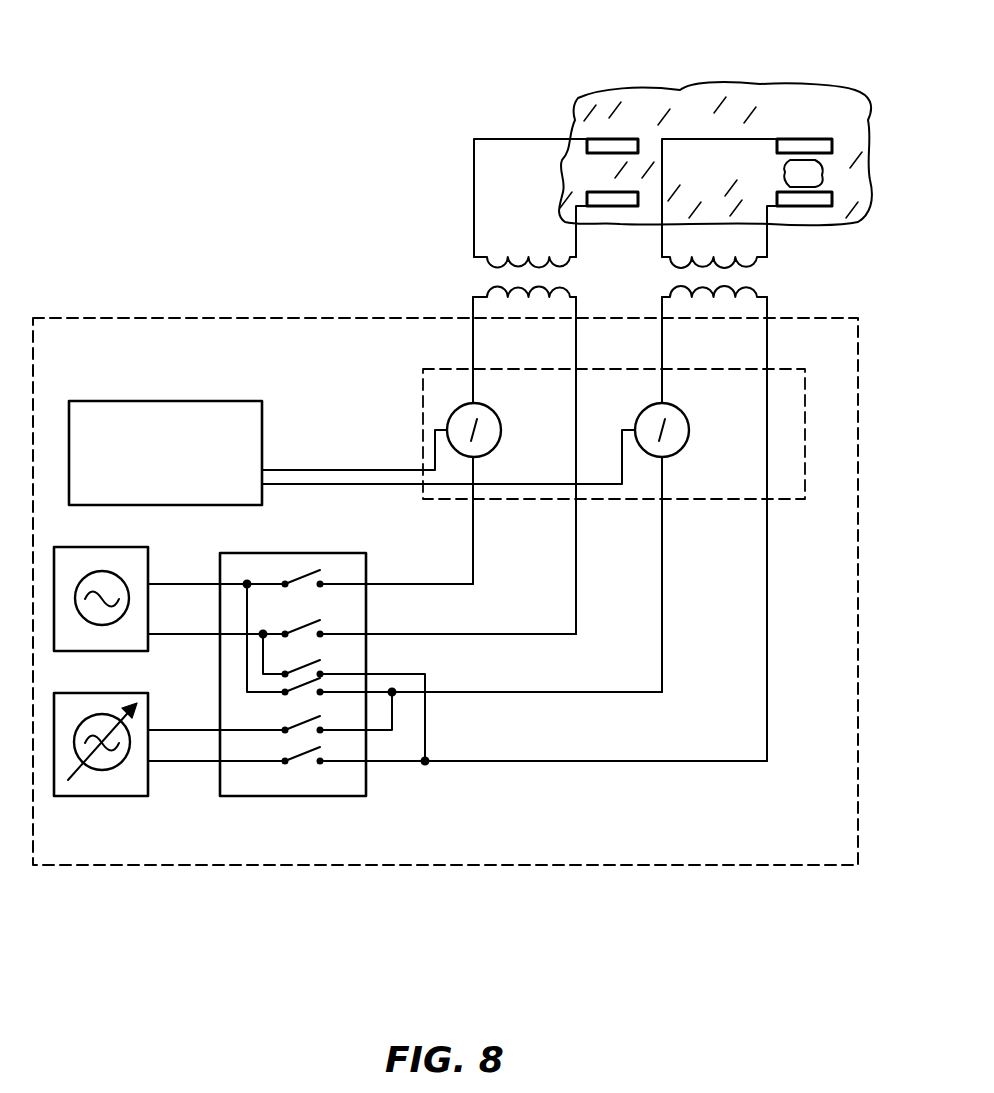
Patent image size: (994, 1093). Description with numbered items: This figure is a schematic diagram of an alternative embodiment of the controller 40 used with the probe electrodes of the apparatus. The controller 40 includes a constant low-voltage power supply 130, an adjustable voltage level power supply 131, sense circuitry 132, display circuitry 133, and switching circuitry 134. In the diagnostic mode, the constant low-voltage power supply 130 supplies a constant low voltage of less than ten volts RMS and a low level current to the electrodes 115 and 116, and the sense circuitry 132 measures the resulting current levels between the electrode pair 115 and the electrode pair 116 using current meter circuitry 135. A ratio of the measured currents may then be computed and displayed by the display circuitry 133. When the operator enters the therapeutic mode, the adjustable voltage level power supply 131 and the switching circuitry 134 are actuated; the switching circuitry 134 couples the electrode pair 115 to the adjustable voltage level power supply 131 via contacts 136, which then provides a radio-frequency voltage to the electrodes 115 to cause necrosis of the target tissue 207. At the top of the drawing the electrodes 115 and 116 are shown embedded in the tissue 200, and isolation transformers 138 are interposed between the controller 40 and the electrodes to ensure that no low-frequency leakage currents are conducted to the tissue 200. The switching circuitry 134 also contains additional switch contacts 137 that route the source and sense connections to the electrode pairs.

The controller 40 is at (835, 866).
The electrode 115 is at (832, 140).
The electrode 116 is at (592, 192).
The constant low-voltage power supply 130 is at (150, 567).
The adjustable voltage level power supply 131 is at (125, 800).
The sense circuitry 132 is at (423, 393).
The display circuitry 133 is at (175, 401).
The switching circuitry 134 is at (358, 797).
The current meter circuitry 135 is at (502, 425).
The contacts 136 is at (300, 727).
The switch 137 is at (262, 650).
The isolation transformers 138 is at (645, 266).
The tissue 200 is at (847, 98).
The target tissue 207 is at (782, 173).